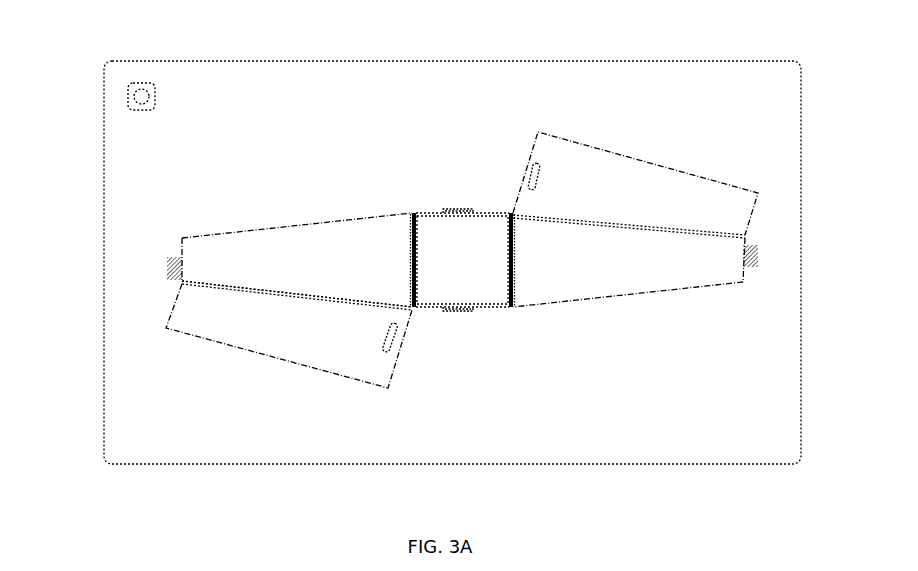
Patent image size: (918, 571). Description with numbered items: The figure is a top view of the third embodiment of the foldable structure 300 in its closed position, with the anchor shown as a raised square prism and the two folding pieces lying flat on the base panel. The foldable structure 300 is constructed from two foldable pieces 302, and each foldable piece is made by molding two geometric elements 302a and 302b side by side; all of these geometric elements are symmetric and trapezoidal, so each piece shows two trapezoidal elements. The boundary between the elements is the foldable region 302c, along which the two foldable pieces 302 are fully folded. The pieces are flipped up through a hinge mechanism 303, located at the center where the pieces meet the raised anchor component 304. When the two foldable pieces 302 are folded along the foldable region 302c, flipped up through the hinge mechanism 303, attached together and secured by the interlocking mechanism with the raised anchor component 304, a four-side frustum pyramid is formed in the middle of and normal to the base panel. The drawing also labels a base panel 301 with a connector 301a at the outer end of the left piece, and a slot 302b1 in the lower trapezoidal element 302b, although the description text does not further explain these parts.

The foldable structure 300 is at (196, 60).
The housing / display panel 301 is at (134, 137).
The connector 301a is at (167, 270).
The foldable pieces 302 is at (462, 266).
The geometric element 302a is at (297, 261).
The geometric element 302b is at (289, 336).
The slot of second cover portion 302b1 is at (388, 343).
The foldable region 302c is at (237, 288).
The hinge mechanism 303 is at (412, 232).
The raised anchor component 304 is at (456, 198).